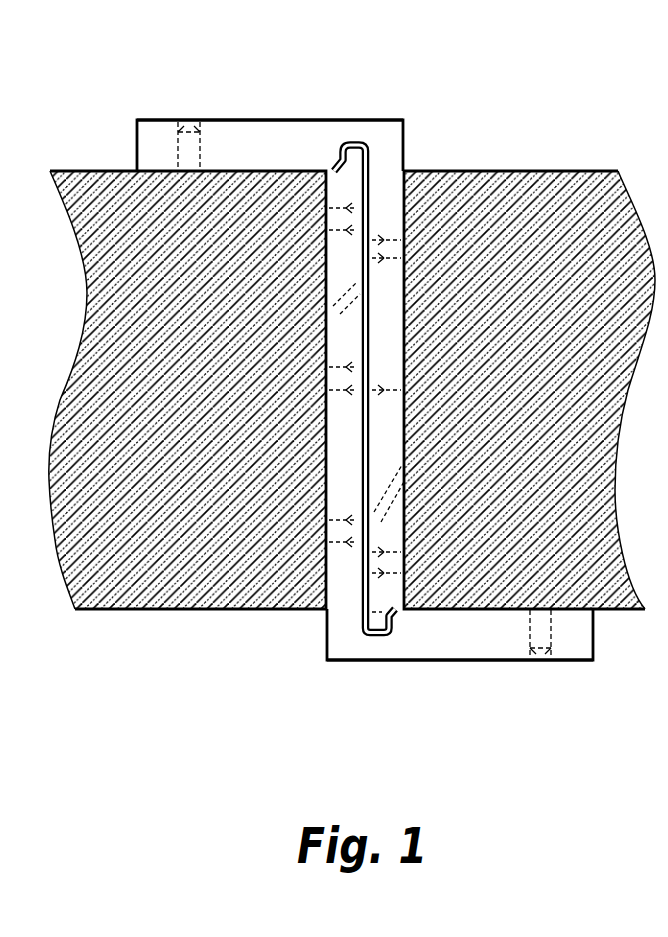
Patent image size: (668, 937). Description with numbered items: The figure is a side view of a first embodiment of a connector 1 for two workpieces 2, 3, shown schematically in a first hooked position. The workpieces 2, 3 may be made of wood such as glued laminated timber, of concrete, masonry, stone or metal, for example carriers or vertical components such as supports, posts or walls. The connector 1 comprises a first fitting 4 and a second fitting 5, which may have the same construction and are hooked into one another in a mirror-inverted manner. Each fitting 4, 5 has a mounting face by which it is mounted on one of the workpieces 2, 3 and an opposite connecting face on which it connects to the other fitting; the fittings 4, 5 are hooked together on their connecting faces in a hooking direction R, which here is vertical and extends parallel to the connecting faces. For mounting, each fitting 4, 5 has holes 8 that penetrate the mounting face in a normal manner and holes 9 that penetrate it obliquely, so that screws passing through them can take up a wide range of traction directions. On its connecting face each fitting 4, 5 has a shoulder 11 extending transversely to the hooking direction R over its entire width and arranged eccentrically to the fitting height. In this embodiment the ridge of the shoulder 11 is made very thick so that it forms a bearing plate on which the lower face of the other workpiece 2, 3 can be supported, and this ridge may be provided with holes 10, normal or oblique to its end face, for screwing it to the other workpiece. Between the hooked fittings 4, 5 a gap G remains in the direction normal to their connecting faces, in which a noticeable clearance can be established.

The connector 1 is at (162, 710).
The workpiece 2 is at (180, 593).
The workpiece 3 is at (546, 182).
The first fitting 4 is at (341, 694).
The second fitting 5 is at (384, 83).
The holes 8 is at (390, 242).
The holes 9 is at (352, 278).
The holes 10 is at (186, 131).
The shoulder 11 is at (281, 131).
The gap G is at (362, 436).
The hooking direction R is at (413, 113).